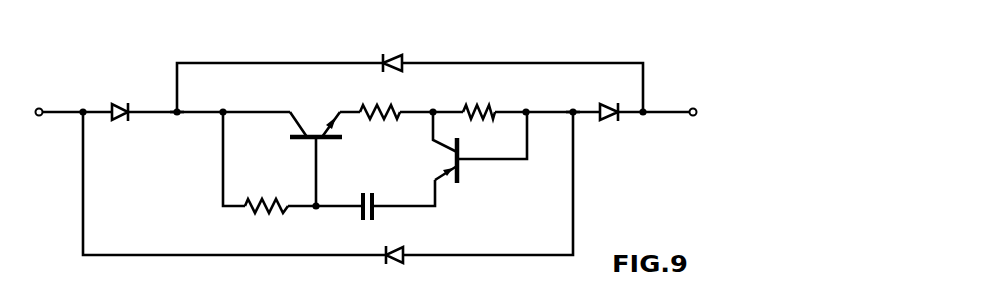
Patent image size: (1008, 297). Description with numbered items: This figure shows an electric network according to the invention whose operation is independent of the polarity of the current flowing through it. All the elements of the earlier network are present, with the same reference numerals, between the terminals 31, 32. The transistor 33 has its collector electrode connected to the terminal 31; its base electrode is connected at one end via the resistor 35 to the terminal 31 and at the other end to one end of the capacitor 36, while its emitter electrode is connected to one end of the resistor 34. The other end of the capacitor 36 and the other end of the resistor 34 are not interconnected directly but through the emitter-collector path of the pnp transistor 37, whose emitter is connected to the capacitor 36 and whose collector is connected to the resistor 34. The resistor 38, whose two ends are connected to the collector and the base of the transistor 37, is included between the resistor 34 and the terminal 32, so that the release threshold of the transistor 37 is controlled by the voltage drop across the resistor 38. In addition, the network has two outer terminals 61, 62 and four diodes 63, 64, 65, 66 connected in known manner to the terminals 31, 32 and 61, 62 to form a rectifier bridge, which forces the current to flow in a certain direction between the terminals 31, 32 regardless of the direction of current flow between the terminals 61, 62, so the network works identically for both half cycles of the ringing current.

The terminal 31 is at (180, 108).
The terminal 32 is at (575, 106).
The transistor 33 is at (316, 125).
The resistor 34 is at (375, 100).
The resistor 35 is at (275, 196).
The capacitor 36 is at (360, 196).
The pnp transistor 37 is at (450, 155).
The resistor 38 is at (478, 100).
The terminal 61 is at (41, 106).
The terminal 62 is at (693, 106).
The diode 63 is at (124, 102).
The diode 64 is at (393, 248).
The diode 65 is at (392, 55).
The diode 66 is at (607, 118).